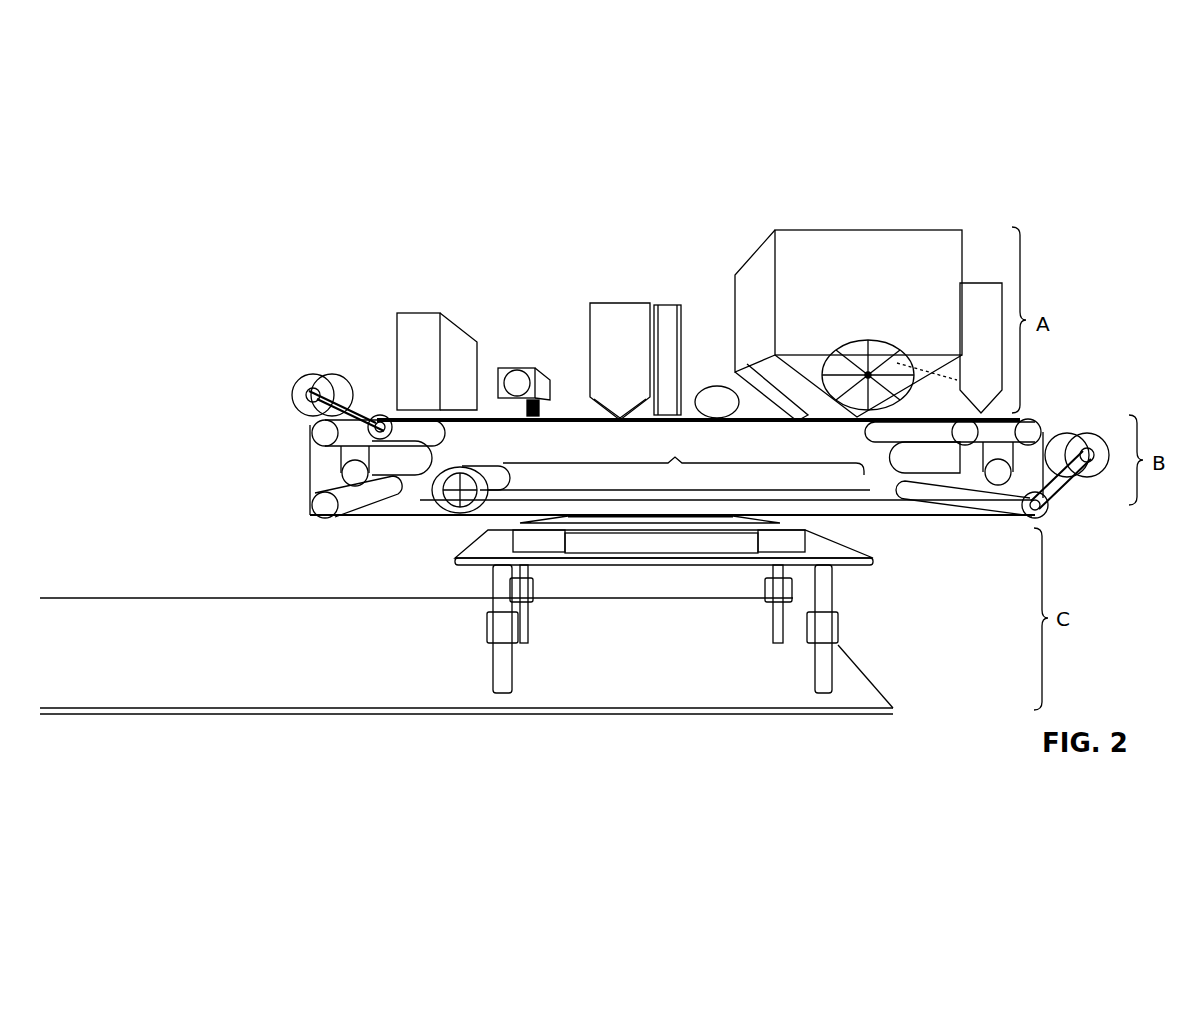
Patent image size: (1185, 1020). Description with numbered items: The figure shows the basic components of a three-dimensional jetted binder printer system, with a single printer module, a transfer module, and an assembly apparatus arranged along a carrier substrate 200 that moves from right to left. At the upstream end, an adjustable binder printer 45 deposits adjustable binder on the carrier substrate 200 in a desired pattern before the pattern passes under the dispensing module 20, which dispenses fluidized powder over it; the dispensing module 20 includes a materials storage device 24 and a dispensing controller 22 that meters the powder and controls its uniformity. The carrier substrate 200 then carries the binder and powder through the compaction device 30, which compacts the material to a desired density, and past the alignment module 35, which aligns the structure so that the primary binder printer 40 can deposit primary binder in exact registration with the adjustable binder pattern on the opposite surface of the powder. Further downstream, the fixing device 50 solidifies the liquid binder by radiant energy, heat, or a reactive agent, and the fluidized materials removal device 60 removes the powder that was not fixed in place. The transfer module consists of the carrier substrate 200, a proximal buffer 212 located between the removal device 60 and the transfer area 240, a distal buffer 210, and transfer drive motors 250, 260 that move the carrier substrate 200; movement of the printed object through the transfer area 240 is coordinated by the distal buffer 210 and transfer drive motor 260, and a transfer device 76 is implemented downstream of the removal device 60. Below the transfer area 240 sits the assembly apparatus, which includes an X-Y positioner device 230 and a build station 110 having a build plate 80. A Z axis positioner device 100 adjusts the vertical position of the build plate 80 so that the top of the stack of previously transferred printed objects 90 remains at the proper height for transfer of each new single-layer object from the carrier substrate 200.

The dispensing module 20 is at (983, 211).
The dispensing controller 22 is at (853, 350).
The materials storage device 24 is at (905, 245).
The compaction device 30 is at (712, 395).
The alignment module 35 is at (668, 312).
The primary binder printer 40 is at (636, 315).
The adjustable binder printer 45 is at (980, 283).
The fixing device 50 is at (516, 378).
The fluidized materials removal device 60 is at (423, 335).
The transfer device 76 is at (437, 502).
The build plate 80 is at (858, 560).
The previously transferred printed objects 90 is at (537, 540).
The Z axis positioner device 100 is at (817, 627).
The build station 110 is at (866, 610).
The carrier substrate 200 is at (488, 415).
The distal buffer 210 is at (1065, 511).
The proximal buffer 212 is at (292, 462).
The X-Y positioner device 230 is at (315, 597).
The transfer area 240 is at (678, 460).
The transfer drive motor 250 is at (298, 390).
The transfer drive motor 260 is at (1083, 445).